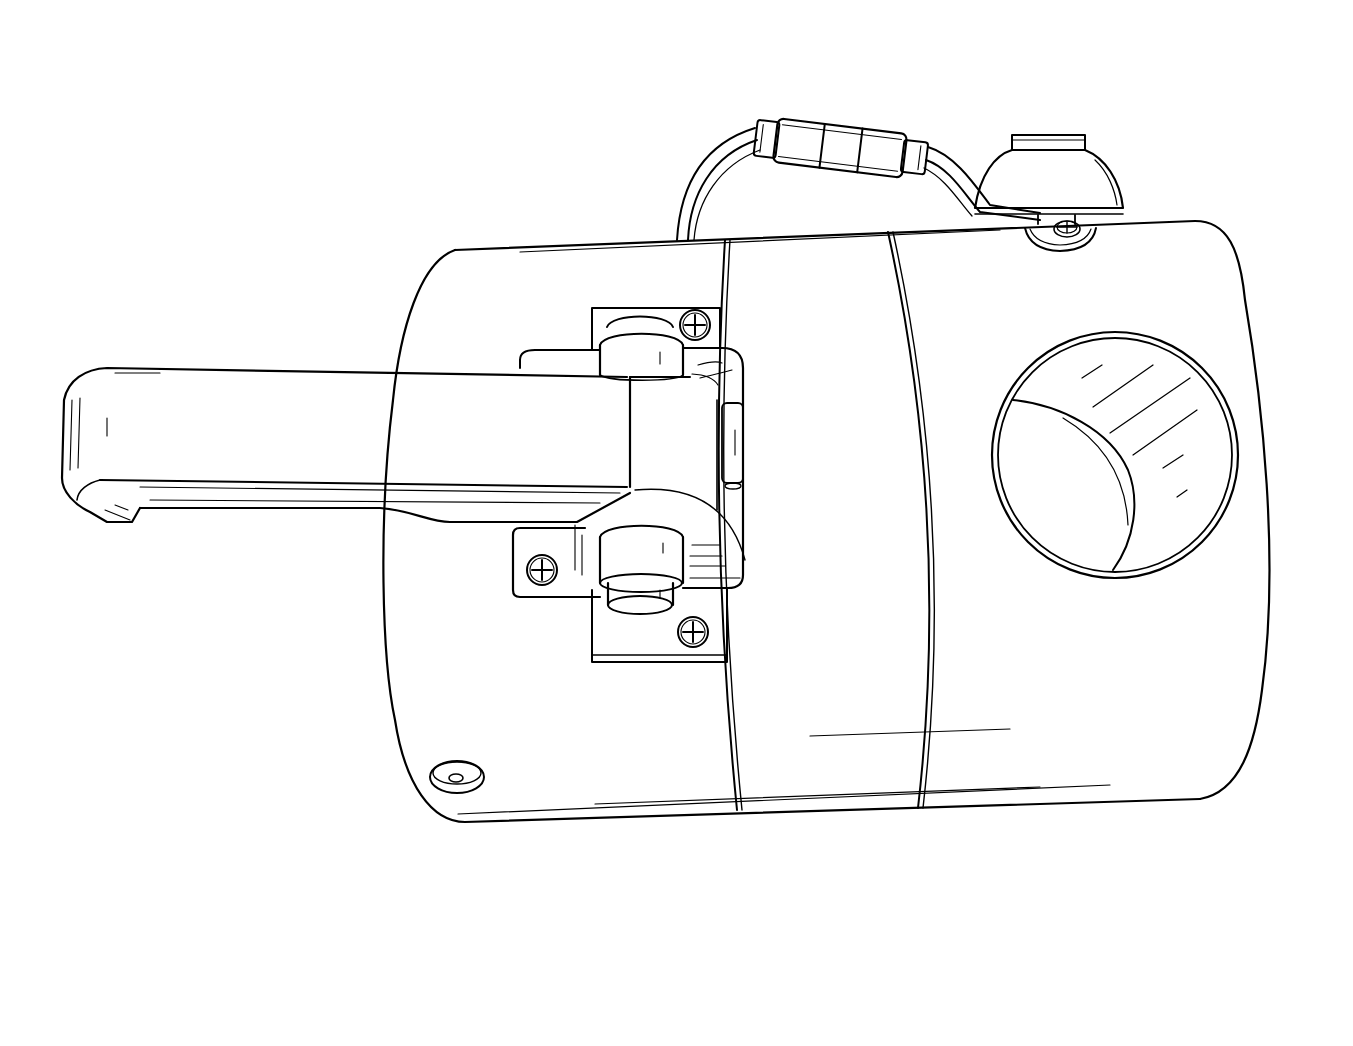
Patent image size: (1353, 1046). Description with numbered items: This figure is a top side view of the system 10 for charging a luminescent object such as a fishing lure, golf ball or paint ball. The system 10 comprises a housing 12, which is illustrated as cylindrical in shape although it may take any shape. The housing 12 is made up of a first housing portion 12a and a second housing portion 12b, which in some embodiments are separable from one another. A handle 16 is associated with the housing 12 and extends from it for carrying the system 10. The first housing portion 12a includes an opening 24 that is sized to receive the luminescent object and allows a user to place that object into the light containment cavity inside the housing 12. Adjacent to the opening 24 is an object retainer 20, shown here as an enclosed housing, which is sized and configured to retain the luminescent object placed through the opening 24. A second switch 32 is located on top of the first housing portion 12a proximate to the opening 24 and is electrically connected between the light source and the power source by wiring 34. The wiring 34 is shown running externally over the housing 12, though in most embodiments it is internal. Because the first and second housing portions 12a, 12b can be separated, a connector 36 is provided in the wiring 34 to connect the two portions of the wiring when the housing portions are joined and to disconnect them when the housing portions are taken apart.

The system 10 is at (785, 76).
The housing 12 is at (1148, 206).
The first housing portion 12a is at (1238, 696).
The second housing portion 12b is at (460, 268).
The handle 16 is at (217, 378).
The object retainer 20 is at (1052, 388).
The opening 24 is at (1232, 418).
The second switch 32 is at (1080, 160).
The wiring 34 is at (710, 158).
The connector 36 is at (848, 133).